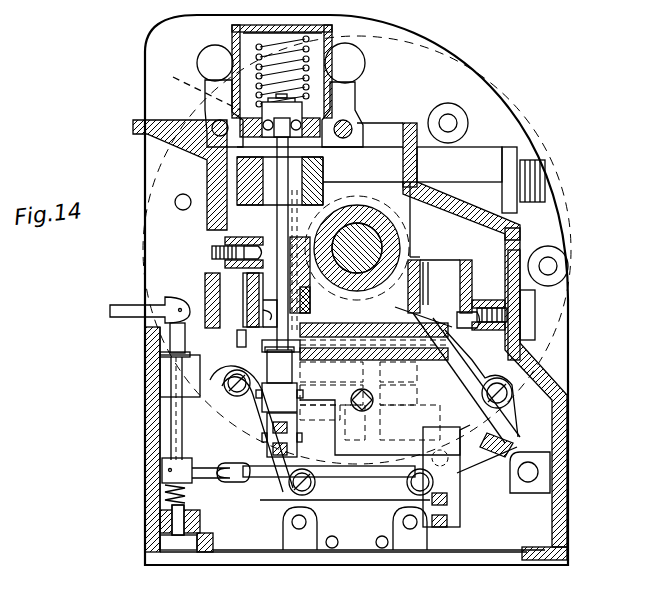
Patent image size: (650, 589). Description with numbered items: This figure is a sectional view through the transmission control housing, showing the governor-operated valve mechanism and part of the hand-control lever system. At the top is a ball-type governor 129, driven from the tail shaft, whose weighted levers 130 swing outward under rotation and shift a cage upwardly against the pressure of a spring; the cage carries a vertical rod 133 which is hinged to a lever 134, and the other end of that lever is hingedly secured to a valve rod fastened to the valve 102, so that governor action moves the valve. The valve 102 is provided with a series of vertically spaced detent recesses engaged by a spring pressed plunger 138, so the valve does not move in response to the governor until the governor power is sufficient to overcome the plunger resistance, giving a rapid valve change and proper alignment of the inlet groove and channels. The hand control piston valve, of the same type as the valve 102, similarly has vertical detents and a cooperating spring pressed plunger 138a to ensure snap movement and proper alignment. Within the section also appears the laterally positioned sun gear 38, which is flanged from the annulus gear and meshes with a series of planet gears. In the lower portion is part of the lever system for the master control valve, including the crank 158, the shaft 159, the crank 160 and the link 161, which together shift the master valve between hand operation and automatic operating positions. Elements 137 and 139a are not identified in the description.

The ball-type governor 129 is at (350, 48).
The weighted levers 130 is at (218, 105).
The vertical rod 133 is at (322, 178).
The sun gear 38 is at (372, 243).
The spring pressed plunger 138 is at (252, 241).
The plunger 137 is at (245, 312).
The valve 102 is at (262, 318).
The screw head 139a is at (445, 318).
The spring pressed plunger 138a is at (470, 308).
The crank 158 is at (143, 300).
The shaft 159 is at (180, 430).
The crank 160 is at (206, 470).
The lever 134 is at (288, 432).
The link 161 is at (272, 495).